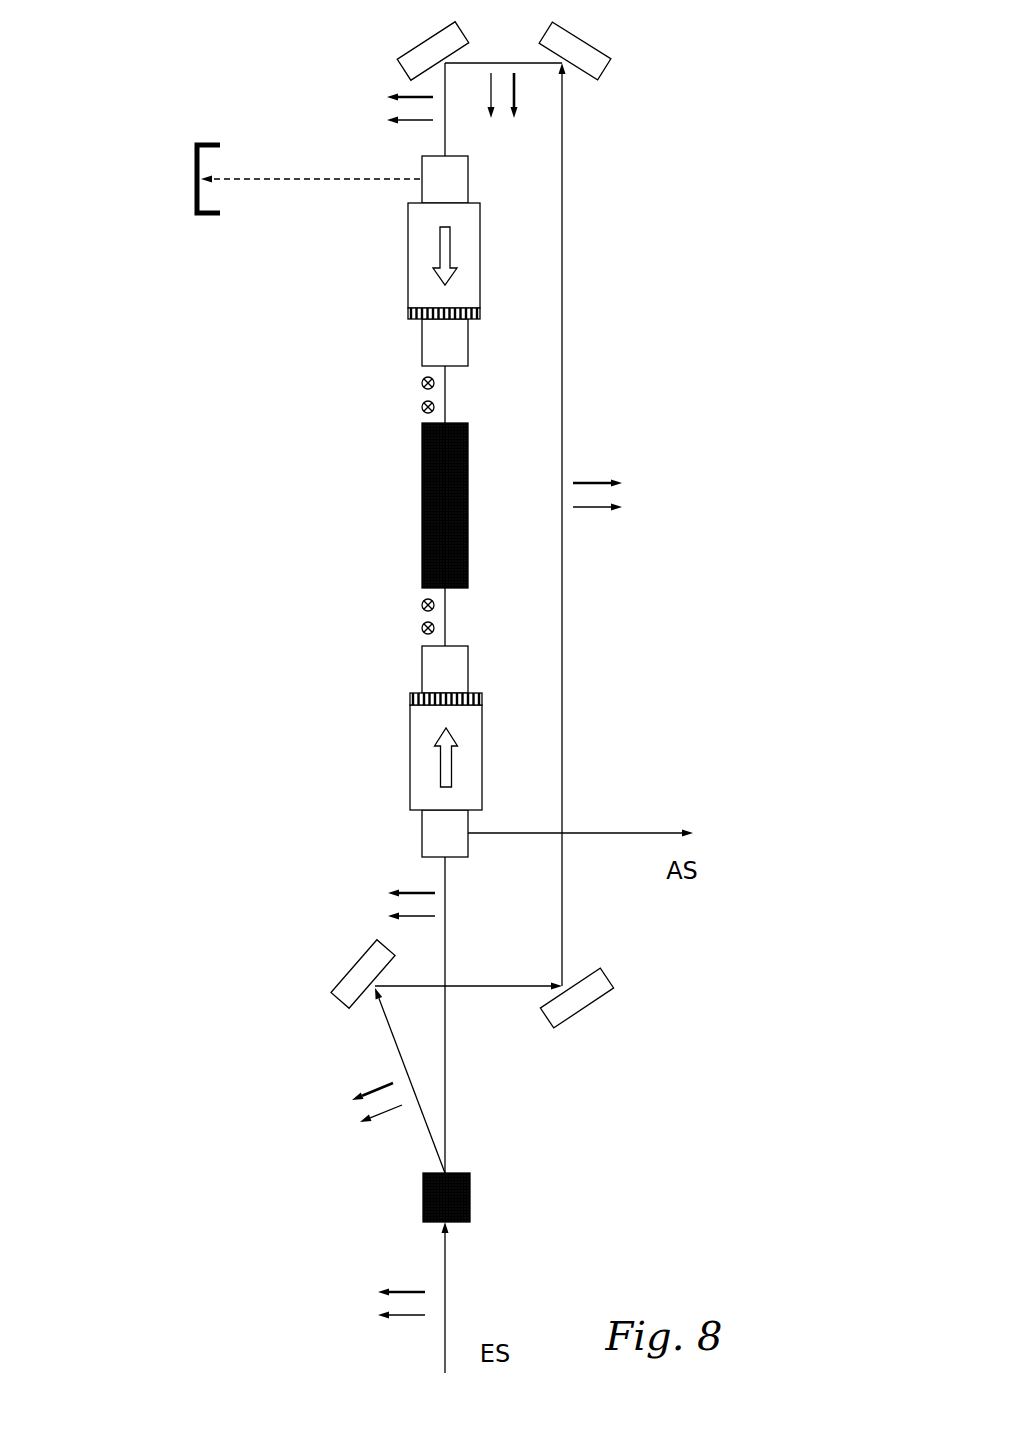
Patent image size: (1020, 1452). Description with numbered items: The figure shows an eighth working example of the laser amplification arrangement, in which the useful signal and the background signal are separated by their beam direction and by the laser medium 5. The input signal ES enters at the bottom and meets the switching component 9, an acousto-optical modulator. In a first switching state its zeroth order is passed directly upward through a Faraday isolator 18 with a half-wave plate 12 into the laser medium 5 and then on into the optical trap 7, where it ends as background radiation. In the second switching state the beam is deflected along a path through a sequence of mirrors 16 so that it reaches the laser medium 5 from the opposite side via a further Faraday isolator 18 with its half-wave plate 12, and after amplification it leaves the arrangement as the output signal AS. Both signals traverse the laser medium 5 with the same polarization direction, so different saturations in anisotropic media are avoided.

The mirrors 16 is at (491, 527).
The optical trap 7 is at (266, 179).
The Faraday isolator 18 is at (389, 506).
The half-wave plate 12 is at (389, 506).
The laser medium 5 is at (401, 505).
The switching component 9 is at (487, 1197).